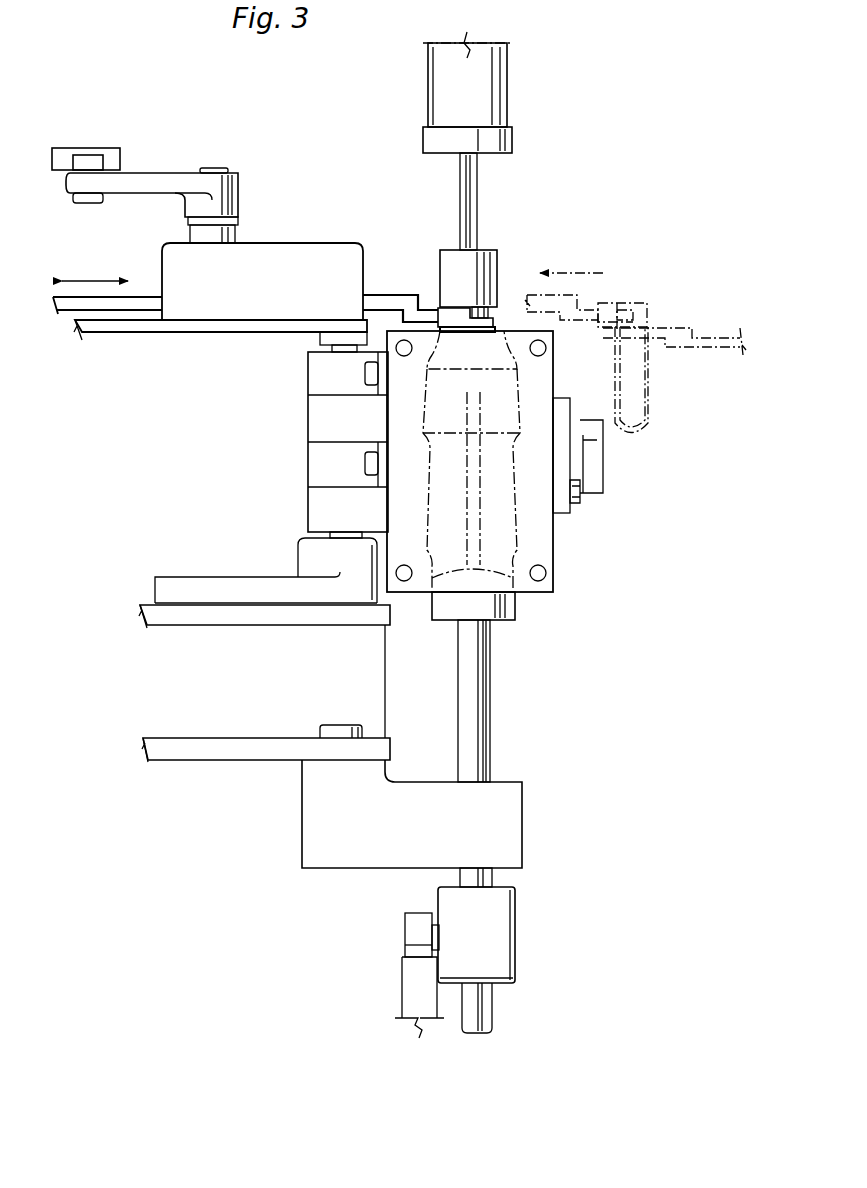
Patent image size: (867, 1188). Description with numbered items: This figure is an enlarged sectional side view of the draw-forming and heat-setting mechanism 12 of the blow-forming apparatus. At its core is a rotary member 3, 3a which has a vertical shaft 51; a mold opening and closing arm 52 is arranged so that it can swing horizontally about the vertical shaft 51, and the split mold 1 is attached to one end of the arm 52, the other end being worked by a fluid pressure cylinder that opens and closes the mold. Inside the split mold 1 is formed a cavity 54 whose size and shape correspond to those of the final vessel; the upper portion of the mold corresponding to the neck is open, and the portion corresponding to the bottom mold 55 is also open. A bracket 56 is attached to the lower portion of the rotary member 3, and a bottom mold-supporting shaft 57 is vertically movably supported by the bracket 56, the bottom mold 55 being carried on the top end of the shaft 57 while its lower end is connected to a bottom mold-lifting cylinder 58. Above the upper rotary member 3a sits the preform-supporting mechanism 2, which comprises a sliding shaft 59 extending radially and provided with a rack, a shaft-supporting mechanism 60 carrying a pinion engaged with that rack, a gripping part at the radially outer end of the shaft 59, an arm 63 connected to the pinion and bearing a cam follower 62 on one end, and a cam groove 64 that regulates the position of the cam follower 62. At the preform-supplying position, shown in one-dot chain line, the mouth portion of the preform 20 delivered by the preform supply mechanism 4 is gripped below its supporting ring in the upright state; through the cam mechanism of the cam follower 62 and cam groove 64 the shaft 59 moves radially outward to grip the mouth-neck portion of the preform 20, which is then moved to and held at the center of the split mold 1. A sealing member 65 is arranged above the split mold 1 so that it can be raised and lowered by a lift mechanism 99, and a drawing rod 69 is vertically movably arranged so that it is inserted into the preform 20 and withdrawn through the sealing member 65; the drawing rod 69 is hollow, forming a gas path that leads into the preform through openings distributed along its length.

The split mold 1 is at (552, 553).
The preform-supporting mechanism 2 is at (390, 276).
The rotary member 3 is at (200, 578).
The upper rotary member 3a is at (188, 335).
The preform supply mechanism 4 is at (705, 333).
The draw-forming and heat-setting mechanism 12 is at (568, 850).
The preform 20 is at (650, 385).
The vertical shaft 51 is at (320, 540).
The mold opening and closing arm 52 is at (365, 420).
The cavity 54 is at (507, 515).
The bottom mold 55 is at (515, 615).
The bracket 56 is at (338, 848).
The bottom mold-supporting shaft 57 is at (487, 708).
The bottom mold-lifting cylinder 58 is at (405, 987).
The sliding shaft 59 is at (138, 300).
The shaft-supporting mechanism 60 is at (282, 245).
The cam follower 62 is at (85, 155).
The arm 63 is at (165, 178).
The cam groove 64 is at (122, 152).
The sealing member 65 is at (497, 270).
The drawing rod 69 is at (483, 477).
The lift mechanism 99 is at (507, 88).